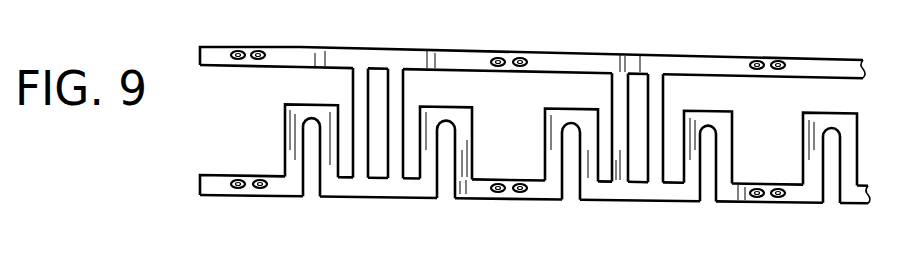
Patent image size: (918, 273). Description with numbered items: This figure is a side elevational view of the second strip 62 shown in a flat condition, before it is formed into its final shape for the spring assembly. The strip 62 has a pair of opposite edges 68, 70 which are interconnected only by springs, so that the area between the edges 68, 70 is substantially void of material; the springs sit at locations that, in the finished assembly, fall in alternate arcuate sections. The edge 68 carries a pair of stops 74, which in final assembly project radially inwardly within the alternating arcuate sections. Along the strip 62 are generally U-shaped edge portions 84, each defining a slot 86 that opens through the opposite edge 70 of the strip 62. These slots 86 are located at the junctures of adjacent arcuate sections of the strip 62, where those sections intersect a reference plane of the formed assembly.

The strip 62 is at (228, 69).
The edge 68 is at (412, 57).
The edge 70 is at (413, 187).
The stops 74 is at (520, 55).
The U-shaped edge portion 84 is at (474, 132).
The slot 86 is at (447, 163).